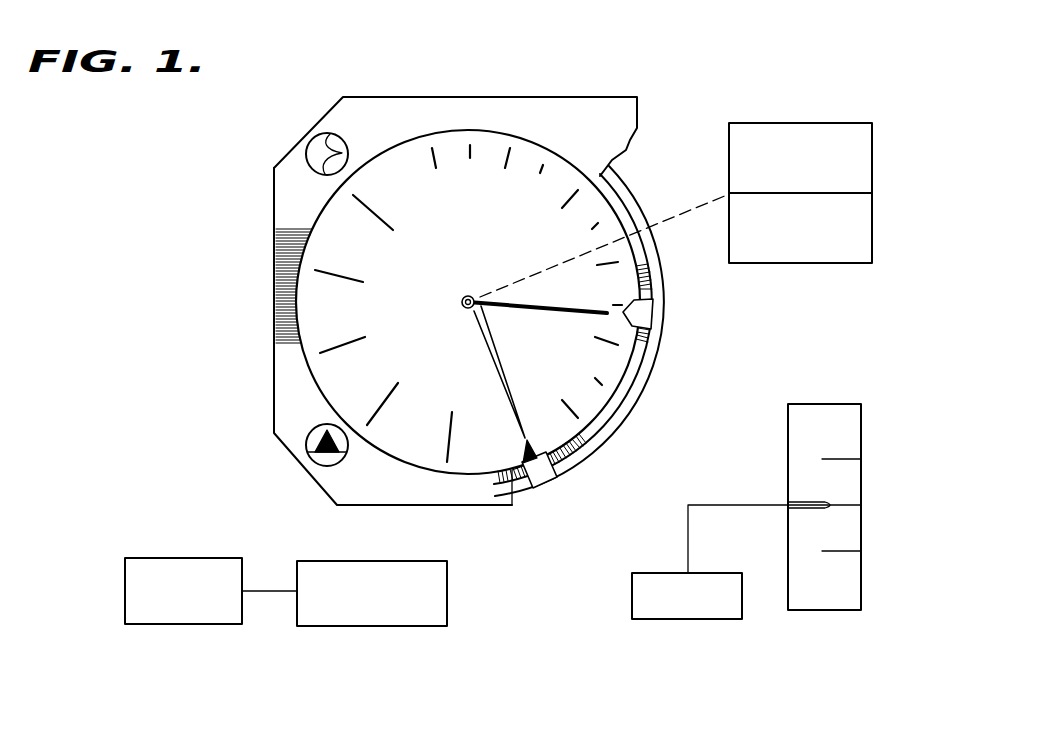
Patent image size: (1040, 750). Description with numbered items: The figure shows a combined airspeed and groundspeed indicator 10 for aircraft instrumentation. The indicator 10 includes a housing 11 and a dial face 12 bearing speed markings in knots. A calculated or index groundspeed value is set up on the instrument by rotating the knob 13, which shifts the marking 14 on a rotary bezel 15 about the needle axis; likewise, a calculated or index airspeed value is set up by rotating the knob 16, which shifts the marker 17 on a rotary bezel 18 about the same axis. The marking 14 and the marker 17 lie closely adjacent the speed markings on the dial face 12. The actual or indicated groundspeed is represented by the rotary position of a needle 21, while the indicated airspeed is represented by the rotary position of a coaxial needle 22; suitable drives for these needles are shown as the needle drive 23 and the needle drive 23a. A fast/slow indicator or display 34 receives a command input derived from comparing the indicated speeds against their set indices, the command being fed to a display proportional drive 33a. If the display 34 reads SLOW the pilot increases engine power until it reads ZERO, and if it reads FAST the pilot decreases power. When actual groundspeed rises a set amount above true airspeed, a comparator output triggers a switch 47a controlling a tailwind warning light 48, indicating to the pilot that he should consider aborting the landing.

The combined airspeed and groundspeed indicator 10 is at (590, 80).
The housing 11 is at (407, 102).
The dial face 12 is at (324, 298).
The knob 13 is at (309, 167).
The marking 14 is at (640, 313).
The rotary bezel 15 is at (652, 383).
The knob 16 is at (305, 442).
The marker 17 is at (545, 498).
The rotary bezel 18 is at (634, 416).
The needle 21 is at (592, 301).
The coaxial needle 22 is at (508, 415).
The needle drive 23 is at (800, 123).
The needle drive 23a is at (790, 263).
The display proportional drive 33a is at (632, 598).
The fast/slow indicator or display 34 is at (778, 456).
The switch 47a is at (181, 558).
The warning light 48 is at (380, 626).